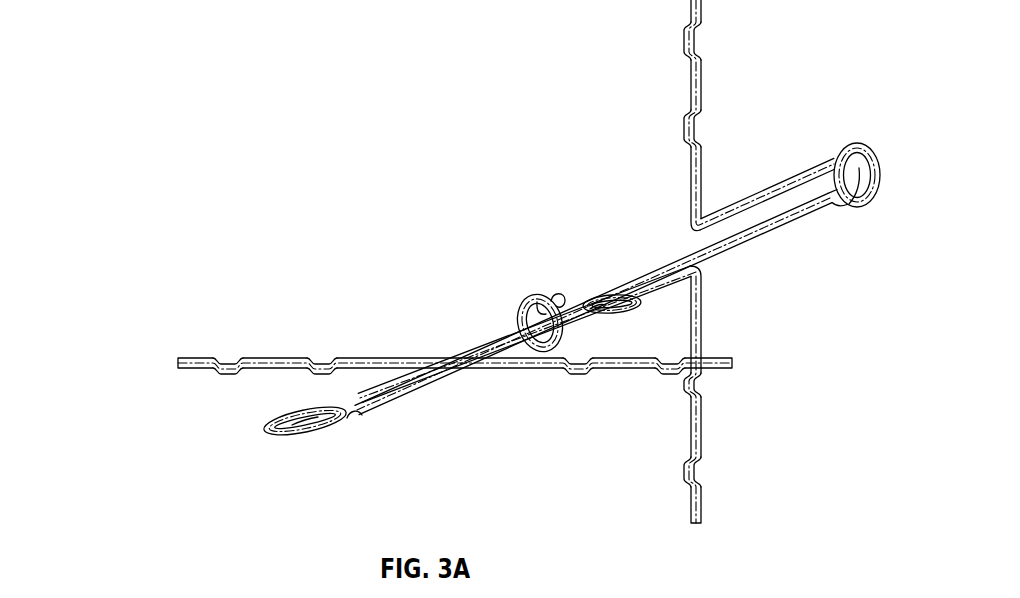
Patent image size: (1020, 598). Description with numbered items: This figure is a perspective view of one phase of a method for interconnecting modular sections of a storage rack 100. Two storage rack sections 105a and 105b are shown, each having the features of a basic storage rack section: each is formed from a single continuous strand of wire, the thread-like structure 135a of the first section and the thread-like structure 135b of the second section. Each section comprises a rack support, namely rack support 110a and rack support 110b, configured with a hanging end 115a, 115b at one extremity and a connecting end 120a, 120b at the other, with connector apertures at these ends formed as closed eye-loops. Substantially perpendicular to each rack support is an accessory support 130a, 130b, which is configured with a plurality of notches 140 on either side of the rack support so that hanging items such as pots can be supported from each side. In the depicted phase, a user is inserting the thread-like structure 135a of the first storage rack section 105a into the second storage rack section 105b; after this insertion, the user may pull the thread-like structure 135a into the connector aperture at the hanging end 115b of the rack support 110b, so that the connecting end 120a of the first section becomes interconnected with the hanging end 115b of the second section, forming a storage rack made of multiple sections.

The storage rack 100 is at (120, 78).
The storage rack section 105a is at (437, 414).
The storage rack section 105b is at (772, 280).
The rack support 110a is at (360, 393).
The rack support 110b is at (770, 194).
The hanging end 115a is at (358, 416).
The hanging end 115b is at (562, 305).
The connecting end 120a is at (607, 313).
The connecting end 120b is at (826, 206).
The accessory support 130a is at (370, 357).
The accessory support 130b is at (688, 182).
The thread-like structure 135a is at (178, 358).
The thread-like structure 135b is at (688, 4).
The notch 140 is at (683, 42).